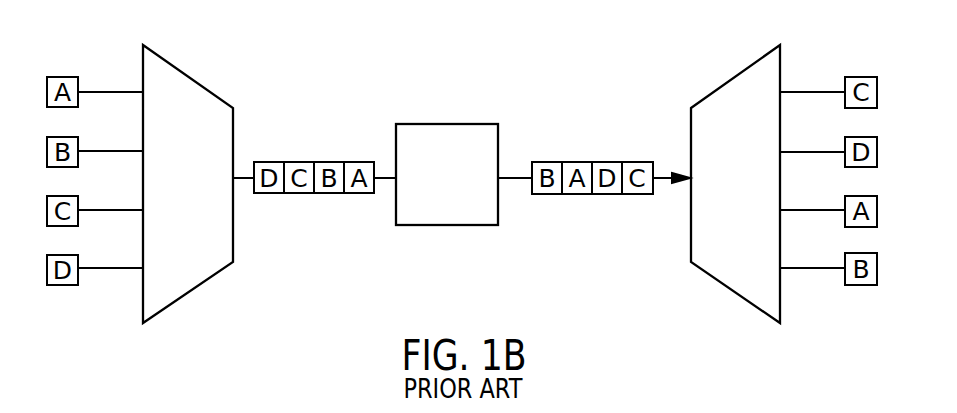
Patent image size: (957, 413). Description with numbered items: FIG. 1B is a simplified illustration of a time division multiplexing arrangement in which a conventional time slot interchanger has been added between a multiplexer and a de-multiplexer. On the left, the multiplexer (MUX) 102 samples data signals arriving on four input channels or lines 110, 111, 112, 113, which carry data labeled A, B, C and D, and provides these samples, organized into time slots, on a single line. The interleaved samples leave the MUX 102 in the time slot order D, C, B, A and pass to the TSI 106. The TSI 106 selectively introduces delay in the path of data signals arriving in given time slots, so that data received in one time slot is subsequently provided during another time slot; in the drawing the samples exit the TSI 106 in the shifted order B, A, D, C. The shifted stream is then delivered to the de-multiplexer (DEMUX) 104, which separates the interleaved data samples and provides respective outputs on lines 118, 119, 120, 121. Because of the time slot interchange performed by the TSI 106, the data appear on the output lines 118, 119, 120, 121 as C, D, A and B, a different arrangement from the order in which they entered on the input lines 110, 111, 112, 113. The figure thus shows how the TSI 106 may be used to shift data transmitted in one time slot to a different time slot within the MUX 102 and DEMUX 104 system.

The multiplexer (MUX) 102 is at (203, 85).
The de-multiplexer (DEMUX) 104 is at (718, 87).
The TSI (time slot interchanger) 106 is at (473, 123).
The channel or line 110 is at (108, 91).
The channel or line 111 is at (108, 150).
The channel or line 112 is at (108, 209).
The channel or line 113 is at (108, 267).
The output line 118 is at (817, 91).
The output line 119 is at (817, 151).
The output line 120 is at (817, 209).
The output line 121 is at (817, 267).